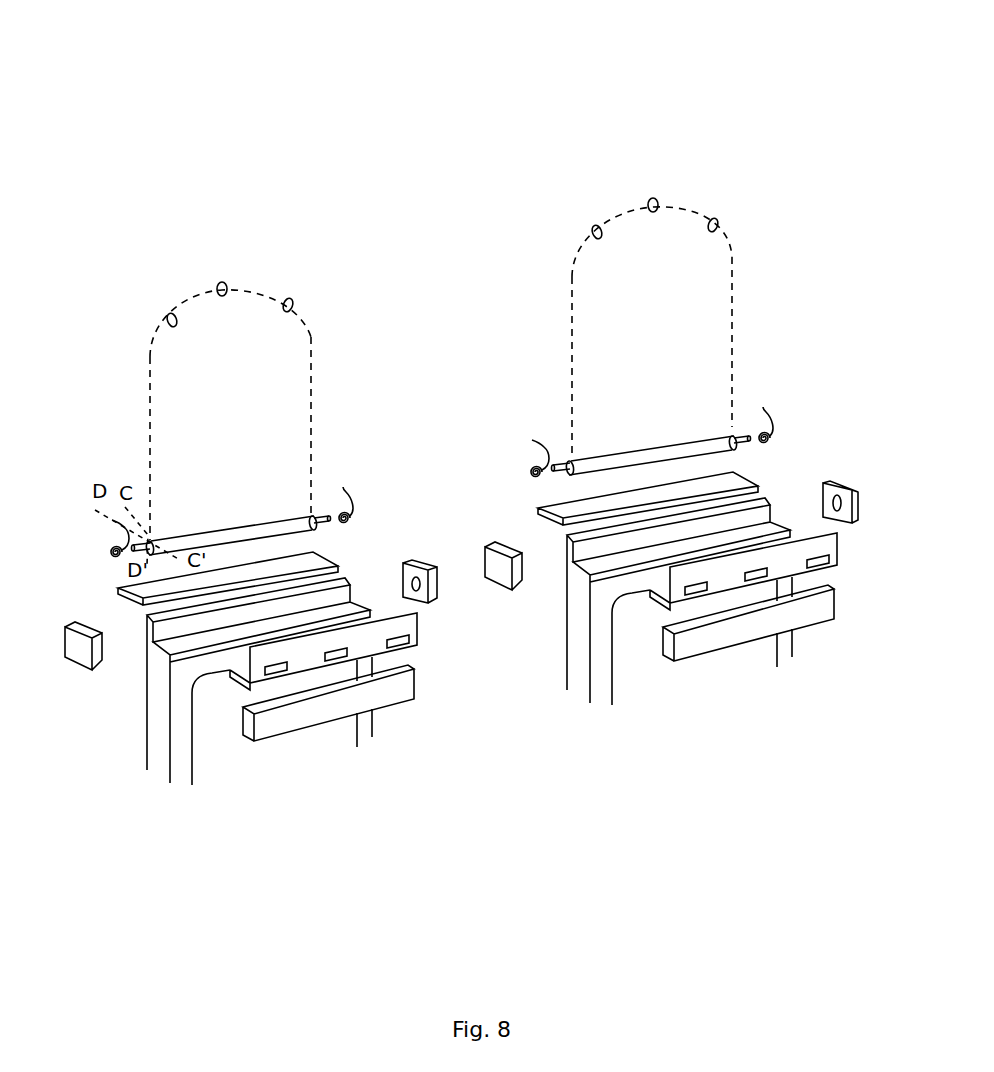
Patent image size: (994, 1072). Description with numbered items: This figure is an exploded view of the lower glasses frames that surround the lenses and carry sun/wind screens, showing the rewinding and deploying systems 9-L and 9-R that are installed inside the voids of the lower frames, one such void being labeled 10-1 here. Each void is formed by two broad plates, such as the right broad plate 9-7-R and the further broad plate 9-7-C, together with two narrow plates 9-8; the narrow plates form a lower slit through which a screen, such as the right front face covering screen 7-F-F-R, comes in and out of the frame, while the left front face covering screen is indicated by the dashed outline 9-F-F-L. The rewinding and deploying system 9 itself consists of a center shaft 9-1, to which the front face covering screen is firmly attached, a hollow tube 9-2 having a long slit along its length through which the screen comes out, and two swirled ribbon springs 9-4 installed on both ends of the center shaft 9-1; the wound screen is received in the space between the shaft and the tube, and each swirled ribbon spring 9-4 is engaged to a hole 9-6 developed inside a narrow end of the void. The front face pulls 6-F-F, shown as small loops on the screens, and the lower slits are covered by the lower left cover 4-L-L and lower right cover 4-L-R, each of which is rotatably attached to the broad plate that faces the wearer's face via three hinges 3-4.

The front face pull 6-F-F is at (218, 284).
The right front face covering screen 7-F-F-R is at (600, 345).
The rewinding and deploying system 9 is at (300, 425).
The left film feed path 9-F-F-L is at (178, 422).
The left rewinding and deploying system 9-L is at (231, 451).
The right rewinding and deploying system 9-R is at (650, 445).
The hollow tube 9-2 is at (213, 545).
The center shaft 9-1 is at (343, 487).
The swirled ribbon spring 9-4 is at (358, 527).
The hole 9-6 is at (65, 642).
The narrow plate 9-8 is at (745, 470).
The frame rail 10-1 is at (167, 633).
The lower left cover 4-L-L is at (270, 657).
The lower right cover 4-L-R is at (682, 580).
The hinge 3-4 is at (753, 573).
The center cross bar 9-7-C is at (330, 706).
The right broad plate 9-7-R is at (823, 610).